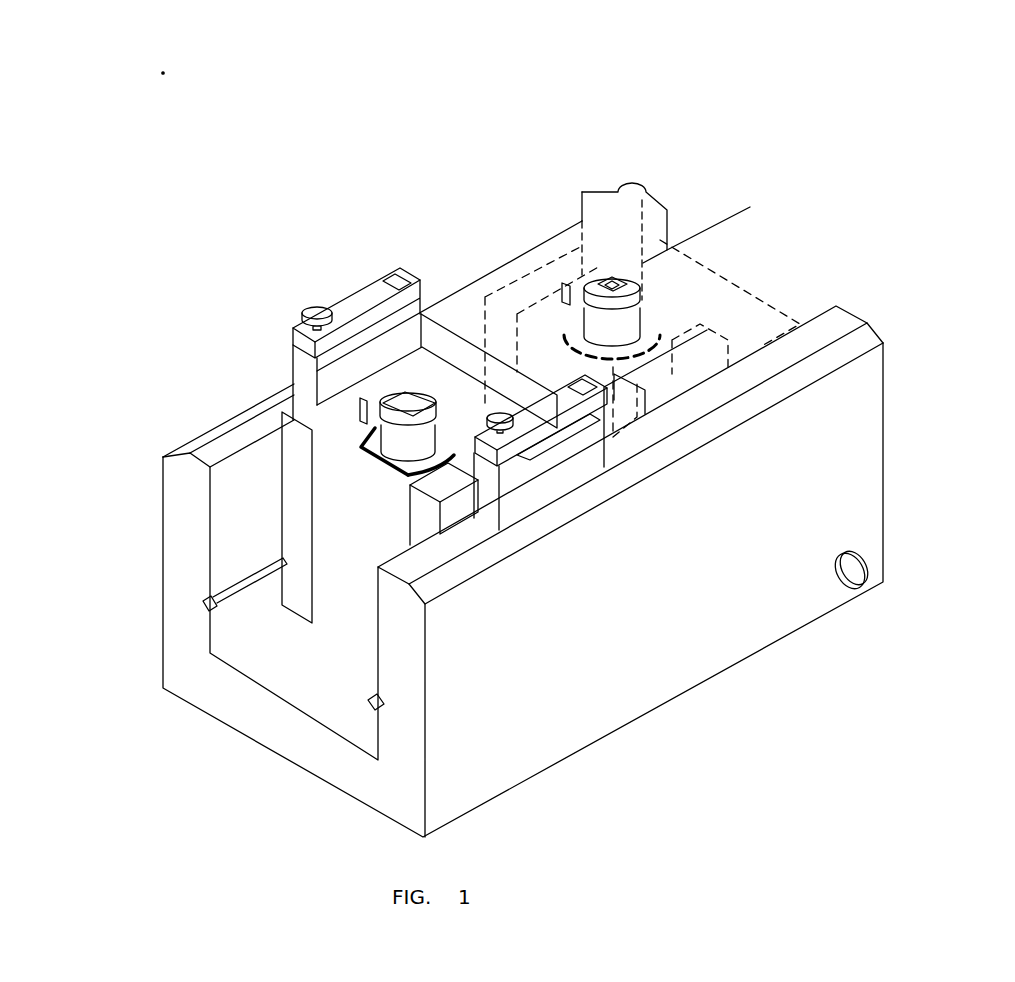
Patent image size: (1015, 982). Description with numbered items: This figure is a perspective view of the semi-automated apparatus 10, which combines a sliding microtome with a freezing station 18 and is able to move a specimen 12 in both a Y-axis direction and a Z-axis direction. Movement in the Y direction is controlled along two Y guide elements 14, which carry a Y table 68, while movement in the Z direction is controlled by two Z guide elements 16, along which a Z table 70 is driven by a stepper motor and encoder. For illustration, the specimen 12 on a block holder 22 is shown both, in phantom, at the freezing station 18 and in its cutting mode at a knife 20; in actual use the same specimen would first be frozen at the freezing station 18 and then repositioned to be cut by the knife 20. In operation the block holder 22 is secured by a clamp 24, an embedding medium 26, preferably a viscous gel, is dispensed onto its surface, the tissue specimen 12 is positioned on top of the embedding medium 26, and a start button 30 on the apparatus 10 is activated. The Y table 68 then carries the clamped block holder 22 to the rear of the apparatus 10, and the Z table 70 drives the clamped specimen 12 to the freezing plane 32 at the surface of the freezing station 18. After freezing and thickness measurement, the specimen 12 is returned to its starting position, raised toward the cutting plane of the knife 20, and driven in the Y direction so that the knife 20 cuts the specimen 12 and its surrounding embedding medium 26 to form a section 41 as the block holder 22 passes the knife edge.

The apparatus 10 is at (522, 51).
The specimen 12 is at (413, 390).
The Y guide elements 14 is at (203, 606).
The Z guide elements 16 is at (352, 393).
The freezing station 18 is at (647, 182).
The knife 20 is at (458, 355).
The block holder 22 is at (372, 430).
The clamp 24 is at (445, 466).
The embedding medium 26 is at (605, 280).
The start button 30 is at (852, 575).
The freezing plane 32 is at (640, 312).
The section 41 is at (443, 402).
The Y table 68 is at (297, 623).
The Z table 70 is at (355, 631).